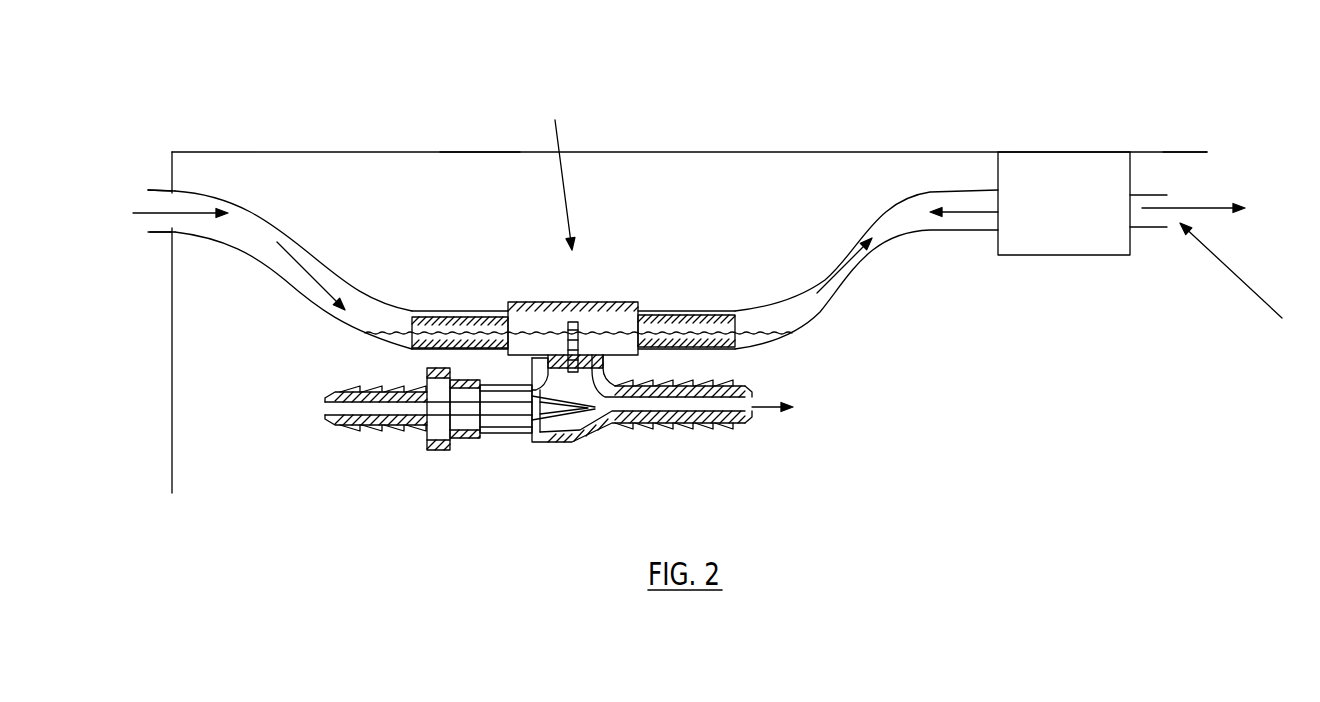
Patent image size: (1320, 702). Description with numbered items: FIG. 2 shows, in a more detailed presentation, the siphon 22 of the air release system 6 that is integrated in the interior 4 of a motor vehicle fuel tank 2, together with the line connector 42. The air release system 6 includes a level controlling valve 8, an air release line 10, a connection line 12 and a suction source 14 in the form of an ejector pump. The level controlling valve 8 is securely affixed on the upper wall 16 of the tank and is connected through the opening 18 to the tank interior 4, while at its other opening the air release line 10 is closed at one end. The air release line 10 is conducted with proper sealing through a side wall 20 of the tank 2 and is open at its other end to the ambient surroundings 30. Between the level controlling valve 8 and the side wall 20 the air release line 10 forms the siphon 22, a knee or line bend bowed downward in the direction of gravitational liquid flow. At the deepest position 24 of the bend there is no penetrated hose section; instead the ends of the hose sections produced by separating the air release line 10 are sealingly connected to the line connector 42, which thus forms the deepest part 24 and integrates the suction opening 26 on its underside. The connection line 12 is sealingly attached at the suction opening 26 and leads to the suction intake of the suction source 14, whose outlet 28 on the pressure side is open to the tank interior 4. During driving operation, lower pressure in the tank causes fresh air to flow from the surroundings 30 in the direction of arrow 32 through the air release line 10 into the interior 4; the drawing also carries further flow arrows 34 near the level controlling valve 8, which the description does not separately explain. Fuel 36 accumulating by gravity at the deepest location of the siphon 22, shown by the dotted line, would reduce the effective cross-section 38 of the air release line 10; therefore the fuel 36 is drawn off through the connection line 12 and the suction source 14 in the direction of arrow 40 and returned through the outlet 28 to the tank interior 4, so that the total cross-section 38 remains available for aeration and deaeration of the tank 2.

The fuel tank 2 is at (1163, 152).
The interior 4 is at (1044, 446).
The air release system 6 is at (487, 139).
The level controlling valve 8 is at (1075, 162).
The air release line 10 is at (250, 218).
The connection line 12 is at (545, 358).
The suction source 14 is at (590, 460).
The upper wall 16 is at (757, 152).
The opening 18 is at (1143, 228).
The side wall 20 is at (170, 320).
The siphon 22 is at (165, 191).
The deepest position 24 is at (557, 343).
The suction opening 26 is at (603, 322).
The outlet 28 is at (760, 420).
The ambient surroundings 30 is at (77, 183).
The arrow 32 is at (143, 212).
The fluid flow 34 is at (977, 210).
The fuel 36 is at (530, 340).
The effective cross-section 38 is at (565, 318).
The arrow 40 is at (763, 418).
The line connector 42 is at (559, 169).